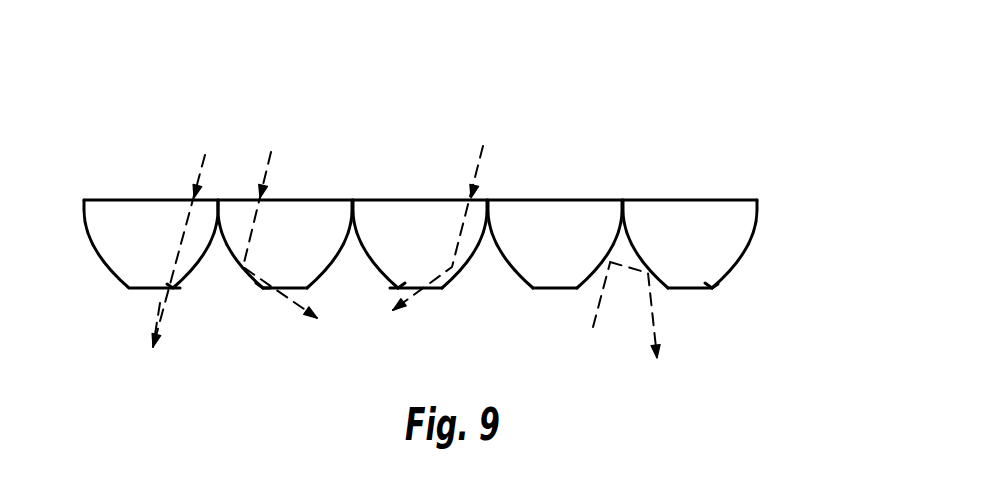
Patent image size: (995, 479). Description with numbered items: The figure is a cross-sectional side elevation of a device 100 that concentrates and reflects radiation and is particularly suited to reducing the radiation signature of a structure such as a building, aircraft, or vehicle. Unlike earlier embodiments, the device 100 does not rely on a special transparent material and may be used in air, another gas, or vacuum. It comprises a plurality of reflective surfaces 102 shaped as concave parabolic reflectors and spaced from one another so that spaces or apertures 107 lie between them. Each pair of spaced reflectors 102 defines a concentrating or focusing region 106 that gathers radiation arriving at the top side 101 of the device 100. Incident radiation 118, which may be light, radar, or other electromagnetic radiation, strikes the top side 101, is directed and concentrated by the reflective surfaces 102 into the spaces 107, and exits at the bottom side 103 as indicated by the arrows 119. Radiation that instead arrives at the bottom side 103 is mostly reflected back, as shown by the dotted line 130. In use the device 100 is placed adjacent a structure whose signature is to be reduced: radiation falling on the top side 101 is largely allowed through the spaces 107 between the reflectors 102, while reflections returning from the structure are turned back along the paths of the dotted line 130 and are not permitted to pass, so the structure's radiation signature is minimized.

The device 100 is at (441, 211).
The top side 101 is at (420, 157).
The reflective surfaces 102 is at (347, 248).
The bottom side 103 is at (543, 315).
The concentrating or focusing regions 106 is at (151, 208).
The spaces or apertures 107 is at (418, 278).
The incident radiation 118 is at (359, 210).
The arrows 119 is at (234, 344).
The dotted line 130 is at (606, 338).